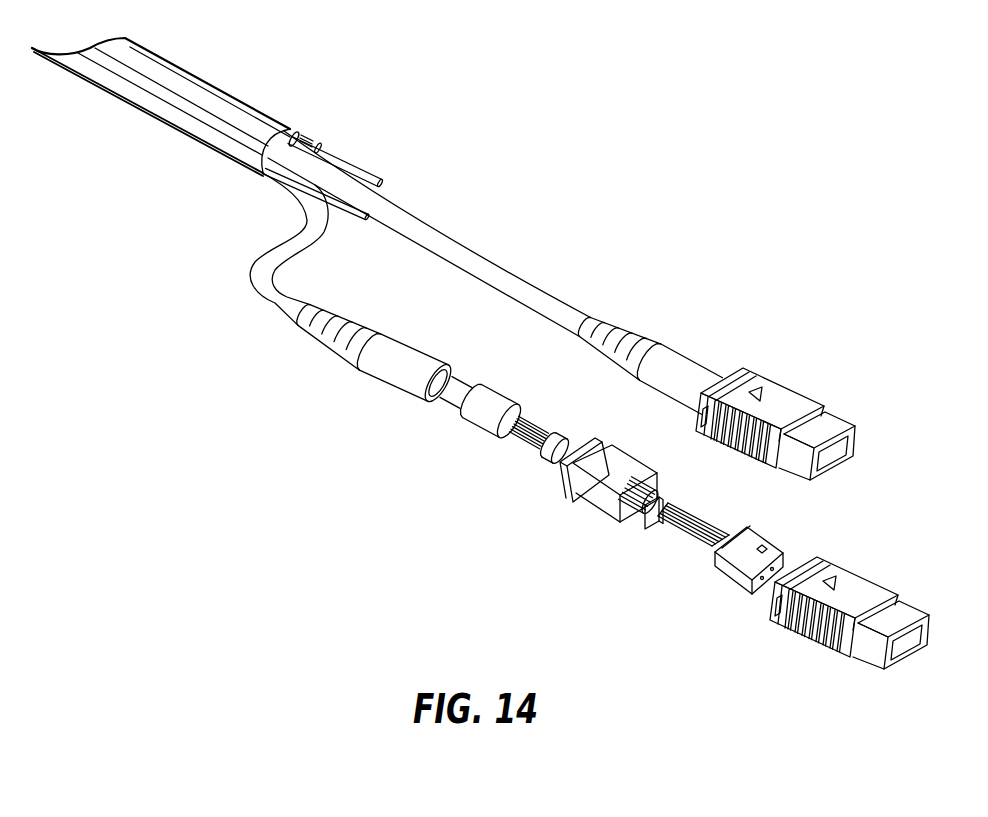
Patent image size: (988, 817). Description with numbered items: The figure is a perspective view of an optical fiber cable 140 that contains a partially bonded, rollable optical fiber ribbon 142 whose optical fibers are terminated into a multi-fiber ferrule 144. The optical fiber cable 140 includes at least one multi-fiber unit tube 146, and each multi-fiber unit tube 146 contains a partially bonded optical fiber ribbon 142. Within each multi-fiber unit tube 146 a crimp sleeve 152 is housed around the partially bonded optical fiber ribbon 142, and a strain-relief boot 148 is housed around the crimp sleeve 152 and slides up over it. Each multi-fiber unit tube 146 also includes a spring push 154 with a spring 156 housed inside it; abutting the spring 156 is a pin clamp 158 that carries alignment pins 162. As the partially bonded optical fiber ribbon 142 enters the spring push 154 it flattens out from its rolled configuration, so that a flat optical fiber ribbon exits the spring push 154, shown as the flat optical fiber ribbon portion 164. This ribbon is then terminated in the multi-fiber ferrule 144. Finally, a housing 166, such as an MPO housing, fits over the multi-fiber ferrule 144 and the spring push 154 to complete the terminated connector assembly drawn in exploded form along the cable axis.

The optical fiber cable 140 is at (246, 80).
The partially bonded optical fiber ribbon 142 is at (540, 453).
The multi-fiber ferrule 144 is at (744, 565).
The multi-fiber unit tube 146 is at (259, 256).
The strain-relief boot 148 is at (332, 364).
The crimp sleeve 152 is at (451, 430).
The spring push 154 is at (576, 506).
The spring 156 is at (635, 472).
The pin clamp 158 is at (645, 521).
The alignment pins 162 is at (690, 507).
The flat optical fiber ribbon portion 164 is at (723, 527).
The housing 166 is at (806, 656).